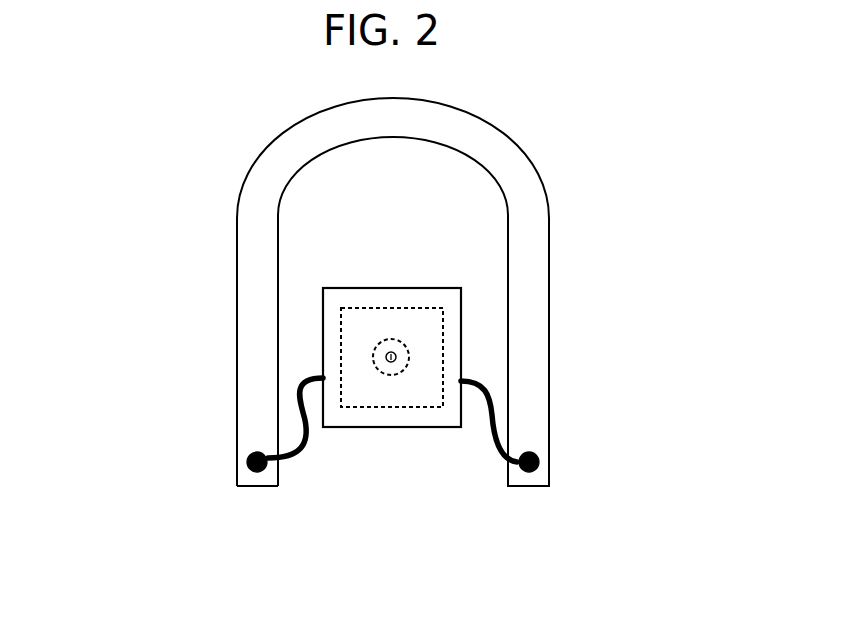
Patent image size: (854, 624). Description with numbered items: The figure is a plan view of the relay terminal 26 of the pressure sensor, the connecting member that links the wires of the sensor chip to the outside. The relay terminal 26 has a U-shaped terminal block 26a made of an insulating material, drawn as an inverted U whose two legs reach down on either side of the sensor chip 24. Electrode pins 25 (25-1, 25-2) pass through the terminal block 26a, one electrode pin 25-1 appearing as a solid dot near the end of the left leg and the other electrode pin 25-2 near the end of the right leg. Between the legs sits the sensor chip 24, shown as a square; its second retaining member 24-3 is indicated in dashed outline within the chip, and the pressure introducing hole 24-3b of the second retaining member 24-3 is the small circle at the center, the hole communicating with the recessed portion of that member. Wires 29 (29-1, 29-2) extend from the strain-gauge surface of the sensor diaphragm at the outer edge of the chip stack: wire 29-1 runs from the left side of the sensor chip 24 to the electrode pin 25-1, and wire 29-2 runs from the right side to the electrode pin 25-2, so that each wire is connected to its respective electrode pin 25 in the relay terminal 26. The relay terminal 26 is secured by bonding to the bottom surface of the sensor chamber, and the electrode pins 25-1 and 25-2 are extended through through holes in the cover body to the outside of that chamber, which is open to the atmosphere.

The sensor chip 24 is at (408, 289).
The second retaining member 24-3 is at (461, 343).
The pressure introducing hole 24-3b is at (391, 352).
The electrode pin 25 is at (384, 502).
The electrode pin 25-1 is at (248, 465).
The electrode pin 25-2 is at (539, 462).
The relay terminal 26 is at (222, 340).
The U-shaped terminal block 26a is at (540, 273).
The wire 29 is at (401, 480).
The wire 29-1 is at (307, 450).
The wire 29-2 is at (487, 440).